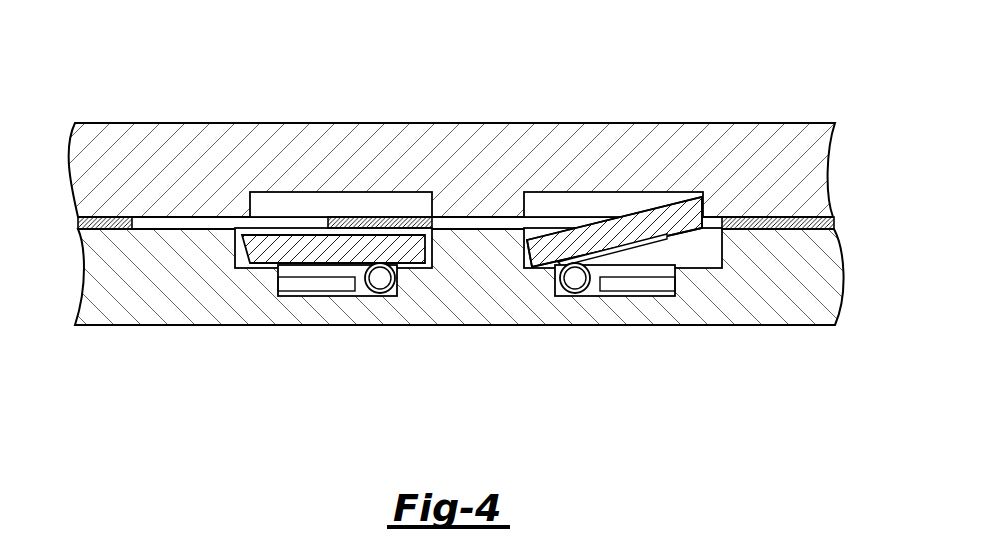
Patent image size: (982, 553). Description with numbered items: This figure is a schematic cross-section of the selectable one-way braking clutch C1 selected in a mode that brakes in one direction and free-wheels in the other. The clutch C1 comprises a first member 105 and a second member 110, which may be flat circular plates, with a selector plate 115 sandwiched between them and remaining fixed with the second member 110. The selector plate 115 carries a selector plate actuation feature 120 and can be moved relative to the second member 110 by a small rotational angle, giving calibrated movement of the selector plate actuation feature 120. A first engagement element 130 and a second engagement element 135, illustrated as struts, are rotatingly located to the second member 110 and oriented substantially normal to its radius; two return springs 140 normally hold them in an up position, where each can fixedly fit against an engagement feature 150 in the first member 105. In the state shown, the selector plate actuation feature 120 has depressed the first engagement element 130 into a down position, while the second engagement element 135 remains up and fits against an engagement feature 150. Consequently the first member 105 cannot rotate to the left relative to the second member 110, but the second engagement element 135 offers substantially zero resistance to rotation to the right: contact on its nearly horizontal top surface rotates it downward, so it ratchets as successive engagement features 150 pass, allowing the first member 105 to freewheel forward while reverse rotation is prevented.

The first member 105 is at (830, 172).
The second member 110 is at (847, 282).
The selector plate 115 is at (133, 226).
The selector plate actuation feature 120 is at (380, 217).
The first engagement element 130 is at (313, 240).
The second engagement element 135 is at (633, 220).
The return spring 140 is at (370, 301).
The engagement feature 150 is at (321, 192).
The selectable one-way braking clutch C1 is at (125, 66).